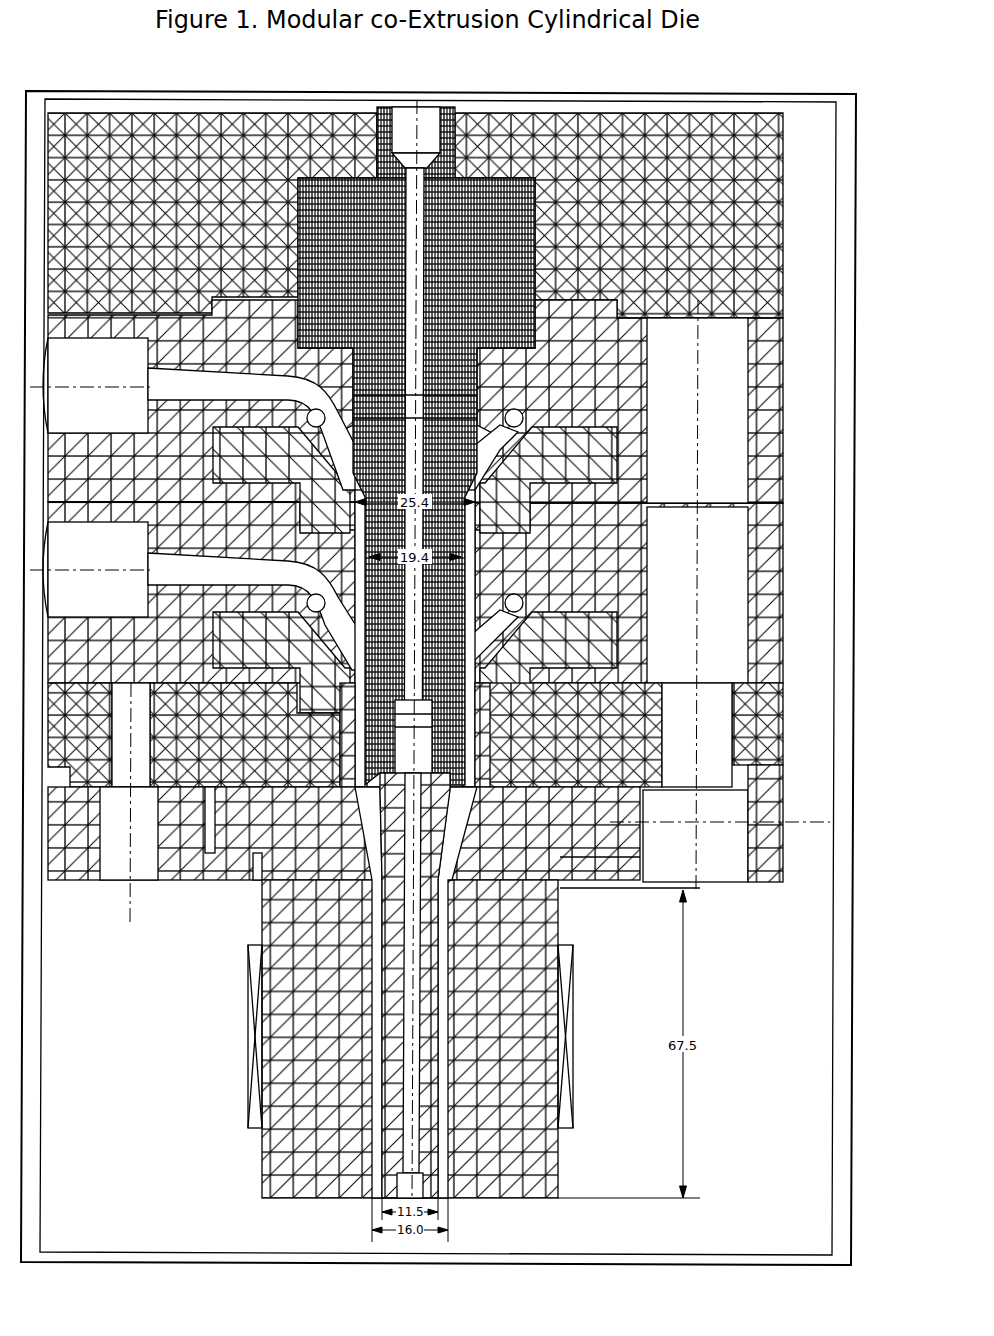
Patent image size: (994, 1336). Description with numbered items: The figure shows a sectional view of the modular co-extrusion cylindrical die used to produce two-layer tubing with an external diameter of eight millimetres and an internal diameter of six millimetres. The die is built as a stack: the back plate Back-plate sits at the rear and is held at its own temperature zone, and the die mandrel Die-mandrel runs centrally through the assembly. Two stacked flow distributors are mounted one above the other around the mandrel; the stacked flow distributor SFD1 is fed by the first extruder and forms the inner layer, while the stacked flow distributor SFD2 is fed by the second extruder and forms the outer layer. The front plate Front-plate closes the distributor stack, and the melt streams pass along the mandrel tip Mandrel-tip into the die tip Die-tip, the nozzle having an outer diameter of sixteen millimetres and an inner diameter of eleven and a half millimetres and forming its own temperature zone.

The back plate Back-plate is at (415, 215).
The die mandrel Die-mandrel is at (416, 642).
The stacked flow distributor SFD1 is at (415, 401).
The stacked flow distributor SFD2 is at (415, 592).
The front plate Front-plate is at (415, 735).
The mandrel tip Mandrel-tip is at (415, 985).
The die tip Die-tip is at (410, 992).